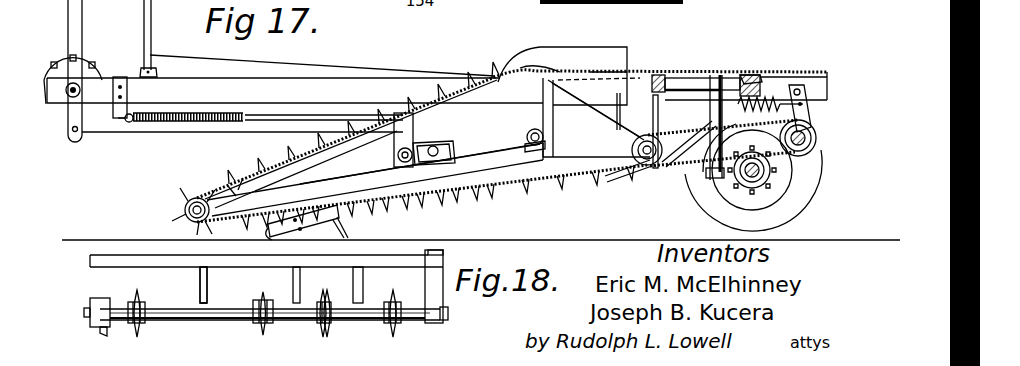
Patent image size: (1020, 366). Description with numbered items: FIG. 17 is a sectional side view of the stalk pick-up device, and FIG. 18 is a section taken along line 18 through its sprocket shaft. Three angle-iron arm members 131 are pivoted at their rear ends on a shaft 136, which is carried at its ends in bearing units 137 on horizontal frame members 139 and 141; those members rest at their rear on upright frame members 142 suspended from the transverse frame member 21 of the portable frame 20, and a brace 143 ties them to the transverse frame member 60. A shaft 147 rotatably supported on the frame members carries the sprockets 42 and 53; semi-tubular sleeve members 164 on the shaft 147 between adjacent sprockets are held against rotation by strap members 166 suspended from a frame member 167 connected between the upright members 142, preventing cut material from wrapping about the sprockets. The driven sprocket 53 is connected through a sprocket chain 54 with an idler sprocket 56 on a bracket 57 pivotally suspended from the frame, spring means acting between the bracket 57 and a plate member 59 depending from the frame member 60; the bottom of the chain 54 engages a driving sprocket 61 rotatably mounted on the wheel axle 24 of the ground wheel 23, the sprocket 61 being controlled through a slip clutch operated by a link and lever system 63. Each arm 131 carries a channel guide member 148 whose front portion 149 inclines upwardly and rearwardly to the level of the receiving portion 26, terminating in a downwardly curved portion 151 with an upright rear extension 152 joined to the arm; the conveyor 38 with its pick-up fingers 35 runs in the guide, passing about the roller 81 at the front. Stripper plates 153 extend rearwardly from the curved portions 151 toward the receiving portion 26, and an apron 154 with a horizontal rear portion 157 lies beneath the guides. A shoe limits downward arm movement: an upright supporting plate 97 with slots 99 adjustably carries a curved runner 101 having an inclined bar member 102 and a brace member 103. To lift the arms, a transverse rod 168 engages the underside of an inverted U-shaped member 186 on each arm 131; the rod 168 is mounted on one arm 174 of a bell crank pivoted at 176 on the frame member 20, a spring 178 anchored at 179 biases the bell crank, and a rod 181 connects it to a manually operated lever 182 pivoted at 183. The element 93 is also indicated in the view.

In FIG. 17, the section line 18 is at (617, 92).
In FIG. 17, the portable frame 20 is at (320, 78).
In FIG. 17, the transverse frame member 21 is at (661, 74).
In FIG. 17, the ground wheel 23 is at (796, 217).
In FIG. 17, the wheel axle 24 is at (775, 179).
In FIG. 17, the receiving portion 26 is at (702, 70).
In FIG. 17, the pick-up fingers 35 is at (452, 83).
In FIG. 17, the conveyor 38 is at (384, 206).
In FIG. 18, the sprocket 42 is at (136, 297).
In FIG. 18, the driven sprocket 53 is at (324, 296).
In FIG. 17, the sprocket chain 54 is at (814, 124).
In FIG. 18, the sprocket chain 54 is at (334, 327).
In FIG. 17, the idler sprocket 56 is at (800, 150).
In FIG. 17, the bracket 57 is at (800, 84).
In FIG. 17, the plate member 59 is at (744, 97).
In FIG. 17, the transverse frame member 60 is at (764, 77).
In FIG. 17, the driving sprocket 61 is at (755, 185).
In FIG. 17, the link and lever system 63 is at (725, 70).
In FIG. 17, the roller 81 is at (185, 204).
In FIG. 17, the sprocket shaft 93 is at (193, 218).
In FIG. 17, the upright supporting plate 97 is at (312, 183).
In FIG. 17, the slots 99 is at (330, 198).
In FIG. 17, the curved runner 101 is at (349, 235).
In FIG. 17, the bar member 102 is at (276, 234).
In FIG. 17, the brace member 103 is at (343, 225).
In FIG. 17, the arm member 131 is at (482, 166).
In FIG. 17, the shaft 136 is at (534, 129).
In FIG. 17, the bearing unit 137 is at (527, 152).
In FIG. 18, the bearing unit 137 is at (100, 330).
In FIG. 18, the horizontal frame member 139 is at (441, 325).
In FIG. 17, the horizontal frame member 141 is at (422, 197).
In FIG. 17, the frame member 142 is at (665, 123).
In FIG. 18, the frame member 142 is at (440, 283).
In FIG. 17, the brace 143 is at (680, 168).
In FIG. 17, the shaft 147 is at (650, 172).
In FIG. 18, the shaft 147 is at (195, 318).
In FIG. 17, the guide member 148 is at (241, 173).
In FIG. 17, the front portion 149 is at (230, 188).
In FIG. 17, the downwardly curved portion 151 is at (565, 76).
In FIG. 17, the upright rear extension 152 is at (548, 117).
In FIG. 17, the stripper plate 153 is at (598, 46).
In FIG. 17, the apron 154 is at (363, 128).
In FIG. 17, the rear apron portion 157 is at (624, 76).
In FIG. 17, the semi-tubular sleeve member 164 is at (632, 156).
In FIG. 18, the semi-tubular sleeve member 164 is at (246, 315).
In FIG. 17, the strap member 166 is at (632, 148).
In FIG. 18, the strap member 166 is at (204, 292).
In FIG. 17, the frame member 167 is at (660, 108).
In FIG. 18, the frame member 167 is at (220, 292).
In FIG. 17, the rod 168 is at (435, 148).
In FIG. 17, the bell crank arm 174 is at (395, 143).
In FIG. 17, the pivot 176 is at (398, 157).
In FIG. 17, the spring 178 is at (176, 113).
In FIG. 17, the spring attachment point 179 is at (166, 113).
In FIG. 17, the rod 181 is at (190, 133).
In FIG. 17, the manually operated lever 182 is at (80, 16).
In FIG. 17, the pivot 183 is at (80, 80).
In FIG. 17, the inverted U-shaped member 186 is at (456, 150).